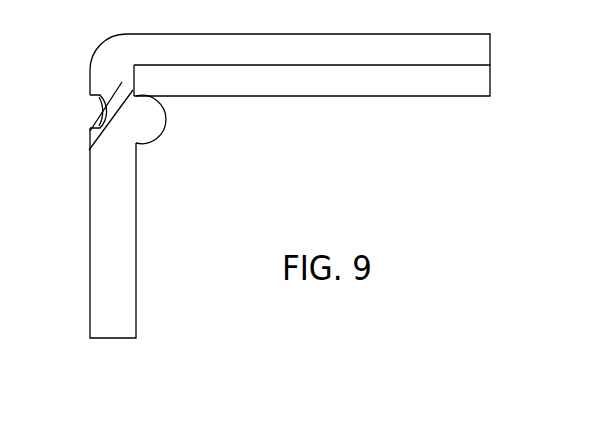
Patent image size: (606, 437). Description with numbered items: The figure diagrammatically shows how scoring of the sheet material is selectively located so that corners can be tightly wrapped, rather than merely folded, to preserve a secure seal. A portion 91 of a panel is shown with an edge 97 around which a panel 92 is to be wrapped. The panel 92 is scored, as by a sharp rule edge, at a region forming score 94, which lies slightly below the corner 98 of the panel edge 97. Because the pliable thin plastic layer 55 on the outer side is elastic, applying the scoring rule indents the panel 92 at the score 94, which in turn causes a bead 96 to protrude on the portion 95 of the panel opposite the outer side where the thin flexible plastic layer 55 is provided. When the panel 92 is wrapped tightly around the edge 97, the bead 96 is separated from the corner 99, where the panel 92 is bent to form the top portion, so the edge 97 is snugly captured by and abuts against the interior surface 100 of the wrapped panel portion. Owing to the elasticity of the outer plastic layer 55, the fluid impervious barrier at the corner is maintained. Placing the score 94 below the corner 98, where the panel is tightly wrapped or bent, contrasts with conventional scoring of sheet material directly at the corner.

The panel 92 is at (344, 47).
The portion of a panel 91 is at (358, 88).
The corner 99 is at (133, 65).
The panel edge 97 is at (134, 80).
The pliable thin plastic layer 55 is at (99, 114).
The score 94 is at (106, 99).
The interior surface 100 is at (90, 131).
The corner of panel edge 98 is at (133, 91).
The bead 96 is at (162, 128).
The portion of the panel 95 is at (107, 280).